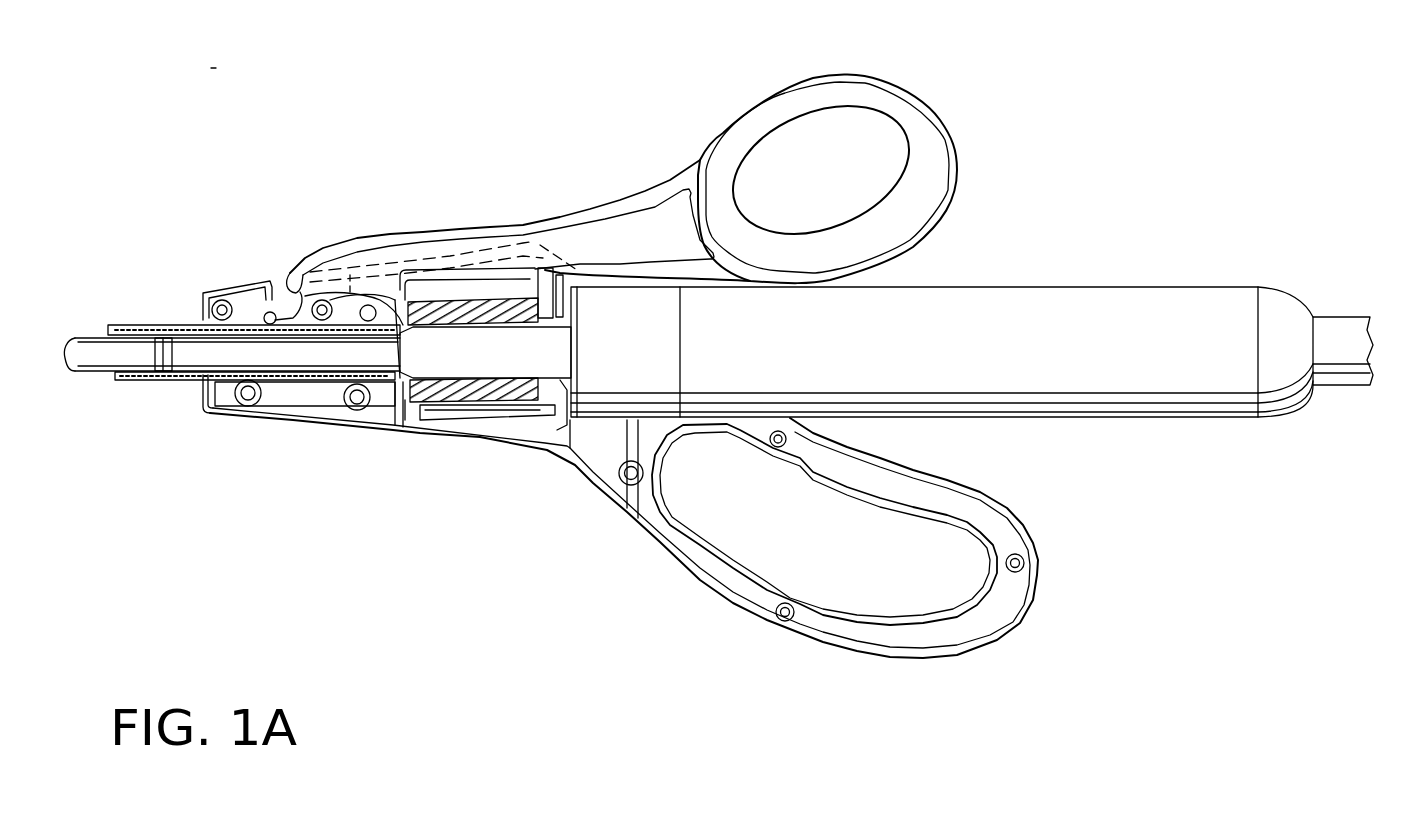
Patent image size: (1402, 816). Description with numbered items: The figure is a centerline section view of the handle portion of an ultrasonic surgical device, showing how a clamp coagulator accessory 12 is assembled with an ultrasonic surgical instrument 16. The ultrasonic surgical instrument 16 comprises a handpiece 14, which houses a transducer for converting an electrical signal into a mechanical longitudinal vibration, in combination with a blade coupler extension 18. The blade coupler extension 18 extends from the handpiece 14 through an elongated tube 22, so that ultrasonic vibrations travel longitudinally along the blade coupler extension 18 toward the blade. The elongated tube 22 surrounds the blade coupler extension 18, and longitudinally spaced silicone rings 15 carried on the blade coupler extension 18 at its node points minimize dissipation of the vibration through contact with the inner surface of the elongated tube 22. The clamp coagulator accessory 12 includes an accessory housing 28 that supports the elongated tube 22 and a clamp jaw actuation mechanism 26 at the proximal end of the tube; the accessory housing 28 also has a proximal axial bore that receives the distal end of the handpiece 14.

The clamp coagulator accessory 12 is at (455, 88).
The handpiece 14 is at (1137, 286).
The rings 15 is at (165, 372).
The ultrasonic surgical instrument 16 is at (966, 272).
The blade coupler extension 18 is at (83, 338).
The elongated tube 22 is at (187, 380).
The clamp jaw actuation mechanism 26 is at (671, 185).
The accessory housing 28 is at (402, 430).